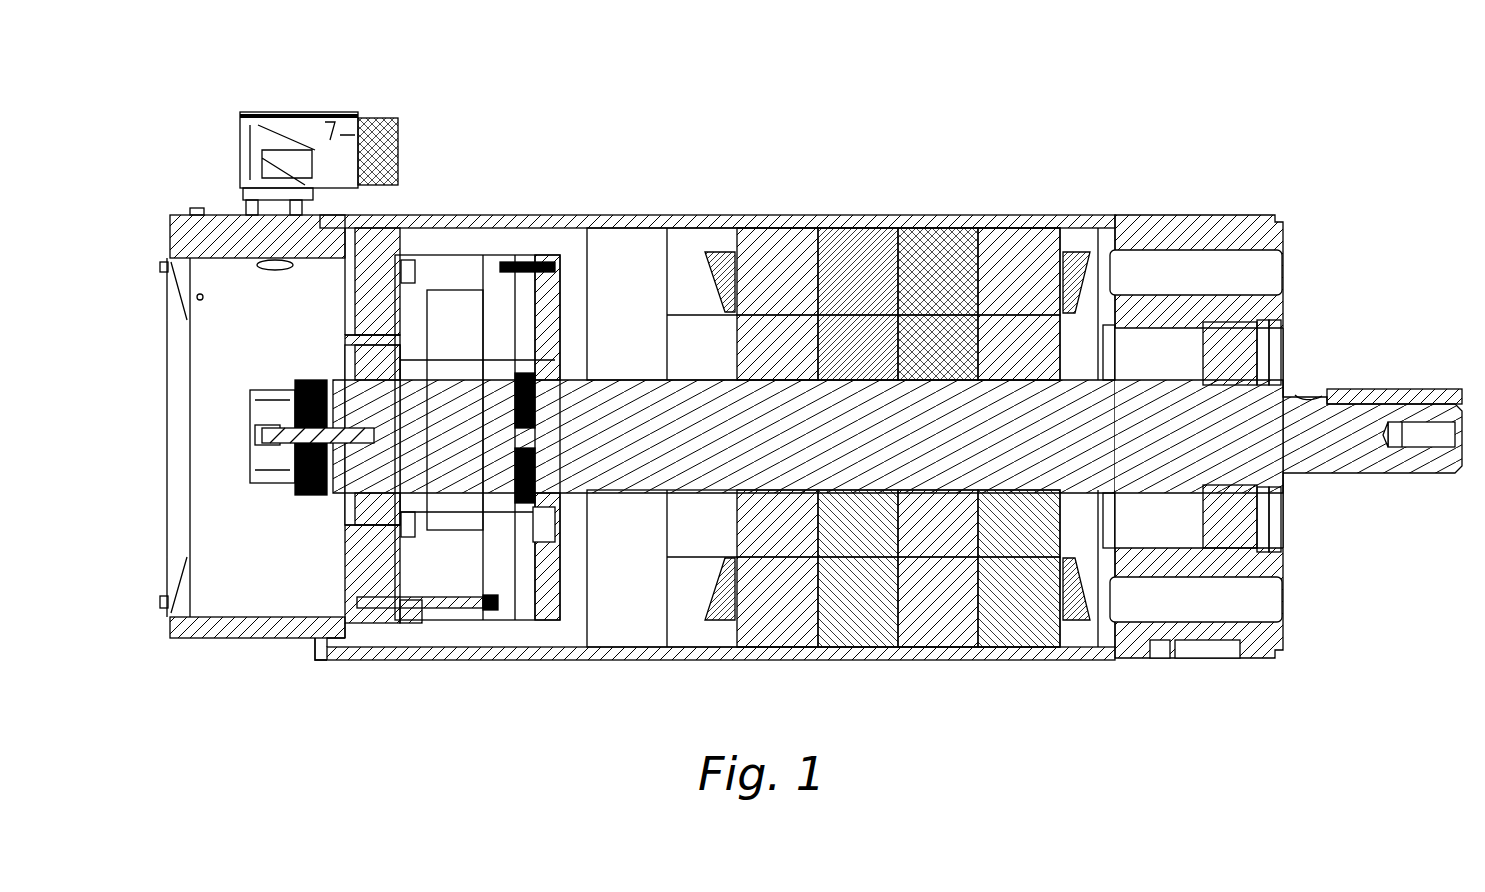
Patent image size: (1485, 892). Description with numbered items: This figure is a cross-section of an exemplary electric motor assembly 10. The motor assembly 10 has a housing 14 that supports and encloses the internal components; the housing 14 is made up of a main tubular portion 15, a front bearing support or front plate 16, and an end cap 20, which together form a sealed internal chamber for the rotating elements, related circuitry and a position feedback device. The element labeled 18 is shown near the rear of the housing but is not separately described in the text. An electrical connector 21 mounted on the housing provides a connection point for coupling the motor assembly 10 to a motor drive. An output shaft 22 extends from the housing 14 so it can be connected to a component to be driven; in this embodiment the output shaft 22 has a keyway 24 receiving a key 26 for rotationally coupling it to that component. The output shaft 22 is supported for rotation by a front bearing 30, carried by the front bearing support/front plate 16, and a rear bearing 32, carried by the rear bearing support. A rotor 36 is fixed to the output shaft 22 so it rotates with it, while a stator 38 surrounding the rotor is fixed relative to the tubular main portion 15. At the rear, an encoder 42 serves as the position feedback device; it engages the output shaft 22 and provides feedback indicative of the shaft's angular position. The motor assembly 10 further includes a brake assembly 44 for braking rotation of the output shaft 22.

The motor assembly 10 is at (665, 130).
The housing 14 is at (903, 190).
The main tubular portion 15 is at (1022, 215).
The front bearing support/front plate 16 is at (1212, 228).
The housing flange 18 is at (327, 641).
The end cap 20 is at (160, 398).
The electrical connector 21 is at (278, 110).
The output shaft 22 is at (1358, 455).
The keyway 24 is at (1312, 395).
The key 26 is at (1410, 396).
The front bearing 30 is at (1226, 348).
The rear bearing 32 is at (378, 348).
The rotor 36 is at (852, 352).
The stator 38 is at (930, 612).
The encoder 42 is at (282, 472).
The brake assembly 44 is at (452, 272).